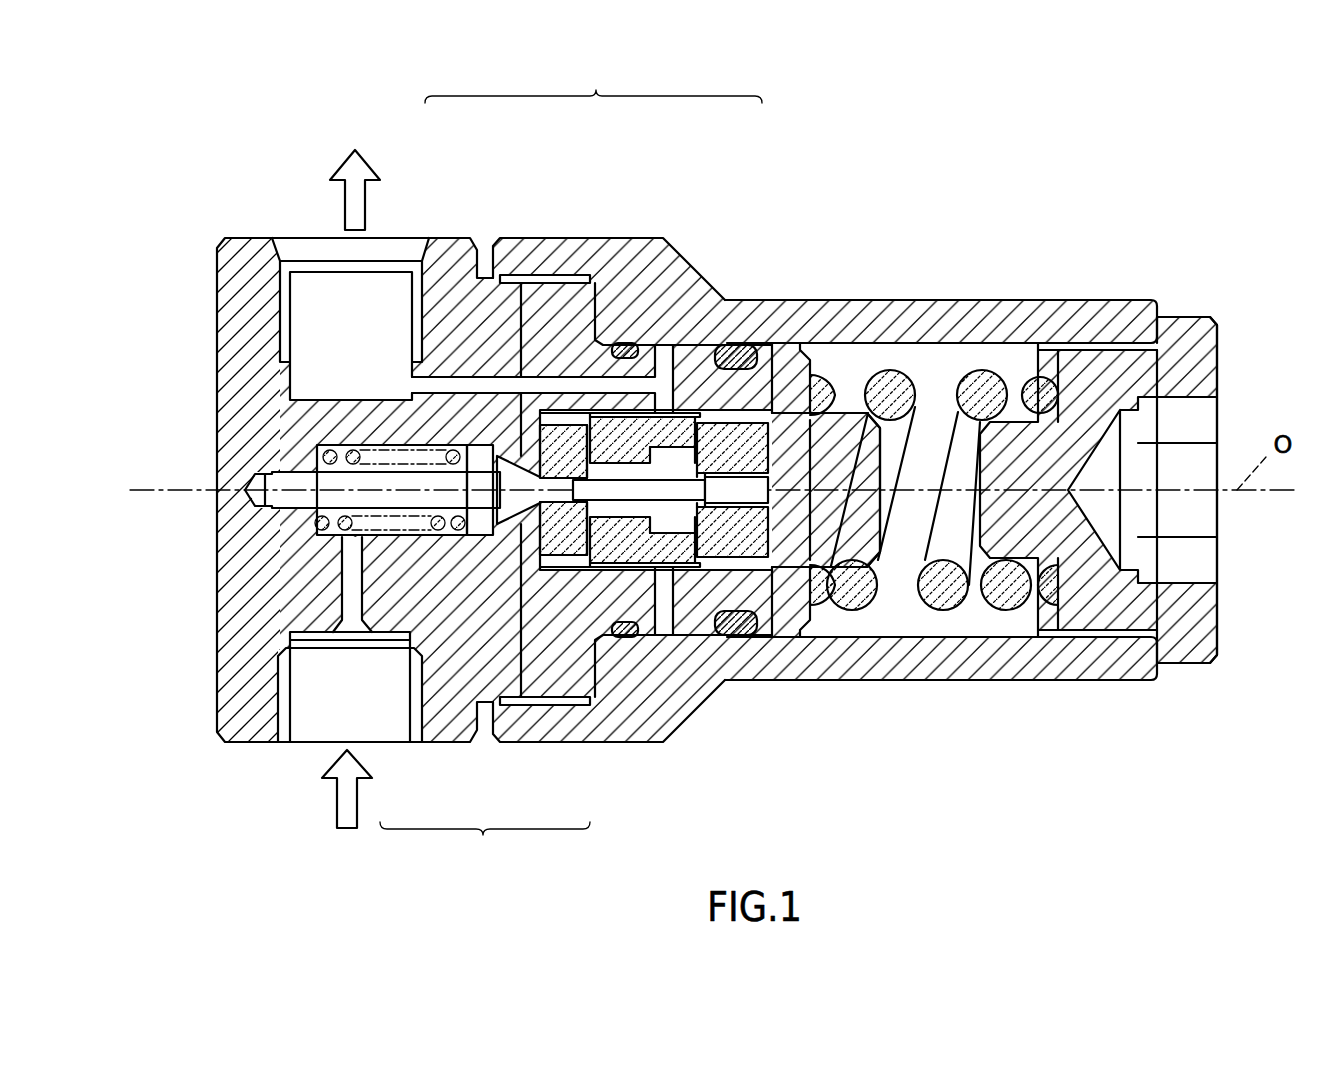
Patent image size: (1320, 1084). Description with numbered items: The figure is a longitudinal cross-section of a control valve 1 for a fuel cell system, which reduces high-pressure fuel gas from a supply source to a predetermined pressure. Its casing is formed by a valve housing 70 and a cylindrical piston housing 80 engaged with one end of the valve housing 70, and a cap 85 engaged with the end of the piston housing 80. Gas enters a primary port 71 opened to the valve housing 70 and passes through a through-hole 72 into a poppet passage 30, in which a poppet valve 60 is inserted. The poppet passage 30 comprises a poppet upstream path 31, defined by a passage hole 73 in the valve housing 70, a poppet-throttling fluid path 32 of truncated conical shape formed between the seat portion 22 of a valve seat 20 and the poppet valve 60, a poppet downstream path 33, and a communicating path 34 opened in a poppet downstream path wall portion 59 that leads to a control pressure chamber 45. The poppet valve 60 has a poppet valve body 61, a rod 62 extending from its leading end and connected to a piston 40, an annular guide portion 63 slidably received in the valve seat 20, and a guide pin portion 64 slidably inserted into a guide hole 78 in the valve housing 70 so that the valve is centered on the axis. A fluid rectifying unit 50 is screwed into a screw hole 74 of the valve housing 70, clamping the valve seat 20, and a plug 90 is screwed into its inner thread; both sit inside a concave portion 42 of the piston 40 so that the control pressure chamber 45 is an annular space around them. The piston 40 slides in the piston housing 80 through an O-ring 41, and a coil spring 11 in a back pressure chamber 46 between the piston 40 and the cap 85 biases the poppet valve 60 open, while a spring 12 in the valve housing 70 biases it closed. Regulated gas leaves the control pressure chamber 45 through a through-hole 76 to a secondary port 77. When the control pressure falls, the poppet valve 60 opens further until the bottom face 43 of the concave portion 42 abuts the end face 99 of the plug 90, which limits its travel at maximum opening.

The control valve 1 is at (1212, 310).
The spring 11 is at (940, 598).
The spring 12 is at (317, 521).
The valve seat 20 is at (523, 437).
The seat portion 22 is at (548, 445).
The poppet passage 30 is at (596, 328).
The poppet upstream path 31 is at (455, 425).
The poppet-throttling fluid path 32 is at (450, 440).
The poppet downstream path 33 is at (686, 420).
The communicating path 34 is at (705, 425).
The piston 40 is at (808, 340).
The O-ring 41 is at (737, 620).
The concave portion 42 is at (752, 400).
The bottom face 43 is at (790, 405).
The control pressure chamber 45 is at (672, 558).
The back pressure chamber 46 is at (933, 370).
The fluid rectifying unit 50 is at (622, 345).
The poppet downstream path wall portion 59 is at (660, 552).
The poppet valve 60 is at (537, 641).
The poppet valve body 61 is at (527, 512).
The rod 62 is at (612, 545).
The guide portion 63 is at (477, 515).
The guide pin portion 64 is at (400, 497).
The valve housing 70 is at (253, 234).
The primary port 71 is at (322, 692).
The through-hole 72 is at (348, 582).
The passage hole 73 is at (300, 452).
The screw hole 74 is at (630, 408).
The through-hole 76 is at (412, 386).
The secondary port 77 is at (308, 318).
The guide hole 78 is at (240, 488).
The piston housing 80 is at (1112, 325).
The cap 85 is at (1182, 320).
The plug 90 is at (762, 590).
The end face 99 is at (805, 525).